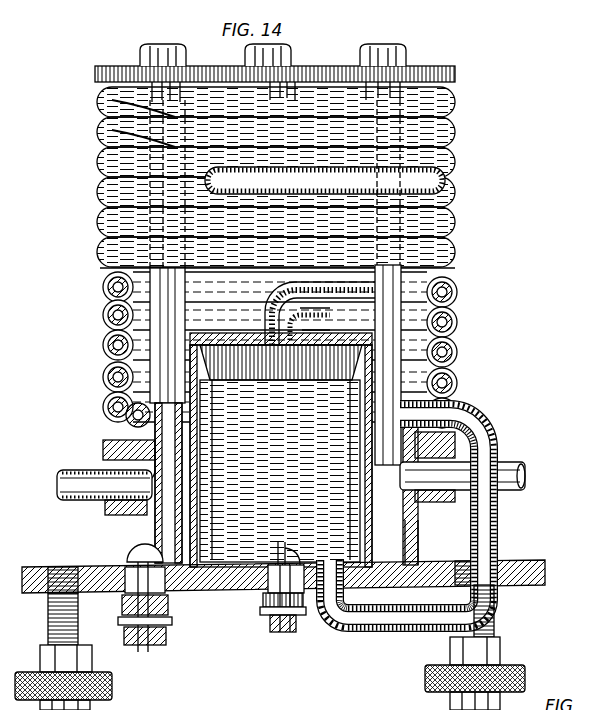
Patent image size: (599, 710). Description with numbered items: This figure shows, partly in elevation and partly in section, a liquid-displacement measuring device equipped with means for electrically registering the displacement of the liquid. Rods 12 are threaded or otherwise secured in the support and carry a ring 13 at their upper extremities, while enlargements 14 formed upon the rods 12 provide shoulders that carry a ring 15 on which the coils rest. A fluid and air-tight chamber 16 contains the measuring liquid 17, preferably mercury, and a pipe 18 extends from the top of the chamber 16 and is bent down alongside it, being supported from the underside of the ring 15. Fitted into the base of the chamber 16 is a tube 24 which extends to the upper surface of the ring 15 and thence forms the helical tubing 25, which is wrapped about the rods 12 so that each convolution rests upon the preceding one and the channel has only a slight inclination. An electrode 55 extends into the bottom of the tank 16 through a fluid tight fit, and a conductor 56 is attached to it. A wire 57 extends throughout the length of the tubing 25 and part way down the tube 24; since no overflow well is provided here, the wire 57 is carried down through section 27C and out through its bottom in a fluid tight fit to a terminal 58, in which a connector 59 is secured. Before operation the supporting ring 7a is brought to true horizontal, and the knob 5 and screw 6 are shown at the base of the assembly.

The knurled knob 5 is at (113, 688).
The screw 6 is at (48, 632).
The supporting ring 7a is at (546, 578).
The rods 12 is at (176, 95).
The ring 13 is at (455, 76).
The enlargements 14 is at (150, 522).
The ring 15 is at (104, 450).
The chamber 16 is at (360, 518).
The measuring liquid 17 is at (405, 506).
The pipe 18 is at (526, 470).
The tube 24 is at (499, 604).
The helical tubing 25 is at (455, 150).
The section 27C is at (150, 433).
The electrode 55 is at (302, 570).
The conductor 56 is at (257, 610).
The wire 57 is at (103, 287).
The terminal 58 is at (130, 546).
The connector 59 is at (190, 618).